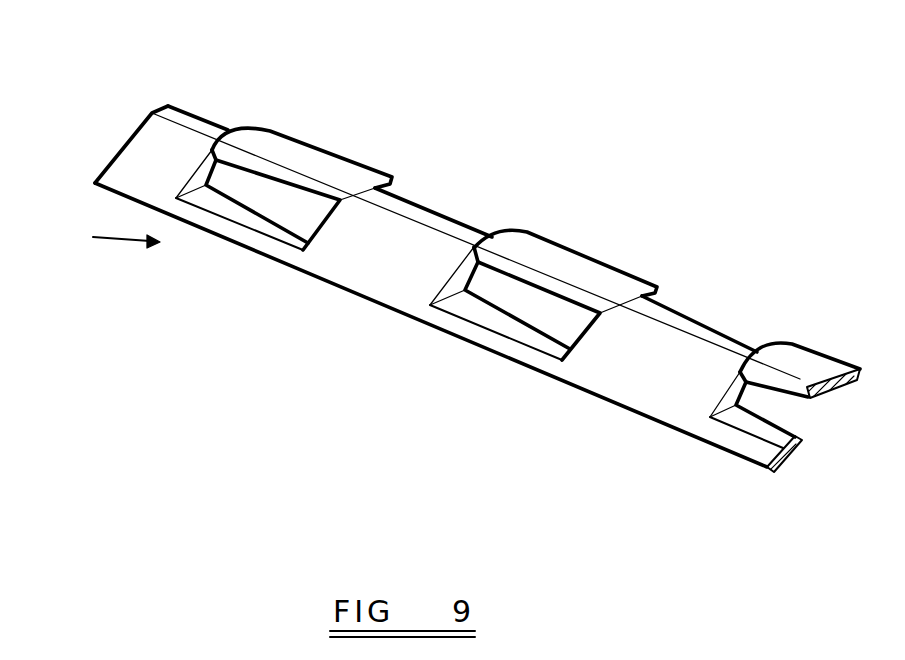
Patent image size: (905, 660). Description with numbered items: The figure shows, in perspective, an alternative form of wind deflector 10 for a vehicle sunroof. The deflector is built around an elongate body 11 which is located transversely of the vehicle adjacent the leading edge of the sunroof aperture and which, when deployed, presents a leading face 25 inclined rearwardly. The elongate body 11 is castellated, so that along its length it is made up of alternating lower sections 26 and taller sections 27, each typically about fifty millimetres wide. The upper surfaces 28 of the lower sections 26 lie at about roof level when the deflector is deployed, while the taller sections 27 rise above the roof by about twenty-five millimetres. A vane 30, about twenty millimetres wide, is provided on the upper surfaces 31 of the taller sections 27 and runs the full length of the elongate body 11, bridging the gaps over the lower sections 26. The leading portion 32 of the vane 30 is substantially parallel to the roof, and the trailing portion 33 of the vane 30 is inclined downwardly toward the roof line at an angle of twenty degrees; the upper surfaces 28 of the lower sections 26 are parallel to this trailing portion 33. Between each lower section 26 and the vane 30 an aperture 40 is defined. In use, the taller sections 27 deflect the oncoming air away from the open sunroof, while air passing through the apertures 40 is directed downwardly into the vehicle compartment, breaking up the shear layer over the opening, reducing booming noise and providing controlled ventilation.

The wind deflector 10 is at (102, 240).
The elongate body 11 is at (125, 163).
The leading face 25 is at (368, 294).
The lower sections 26 is at (217, 232).
The taller sections 27 is at (413, 238).
The upper surfaces of the lower sections 28 is at (280, 232).
The vane 30 is at (353, 160).
The upper surfaces of the taller sections 31 is at (197, 115).
The leading portion of the vane 32 is at (795, 440).
The trailing portion of the vane 33 is at (843, 389).
The apertures 40 is at (252, 188).